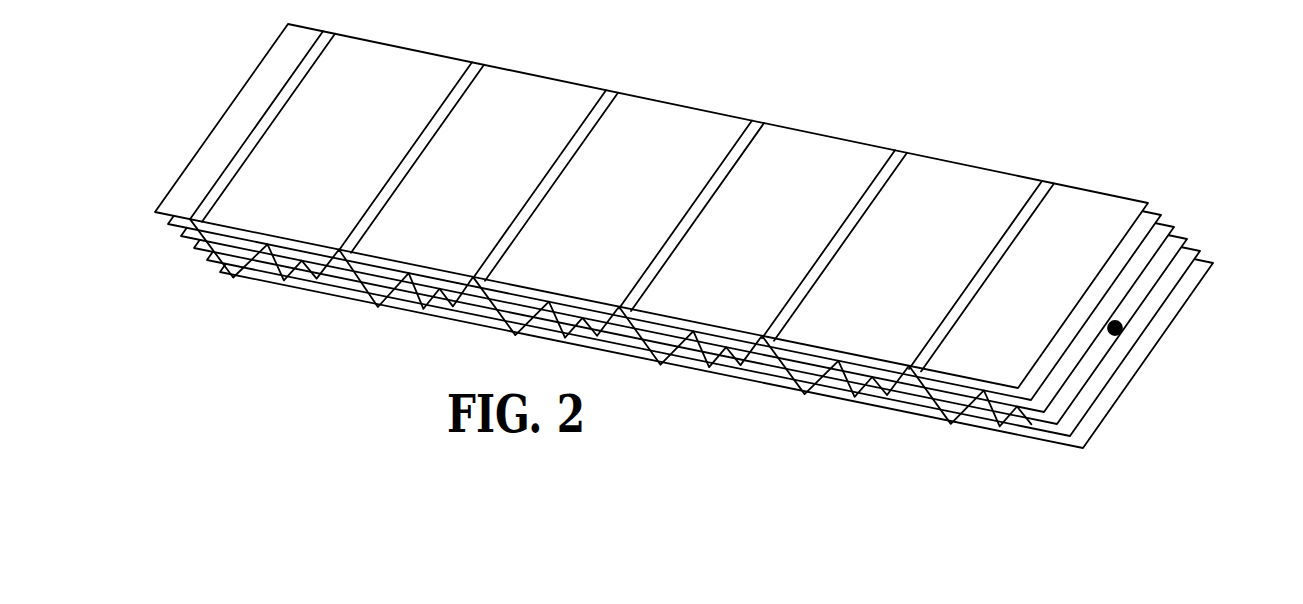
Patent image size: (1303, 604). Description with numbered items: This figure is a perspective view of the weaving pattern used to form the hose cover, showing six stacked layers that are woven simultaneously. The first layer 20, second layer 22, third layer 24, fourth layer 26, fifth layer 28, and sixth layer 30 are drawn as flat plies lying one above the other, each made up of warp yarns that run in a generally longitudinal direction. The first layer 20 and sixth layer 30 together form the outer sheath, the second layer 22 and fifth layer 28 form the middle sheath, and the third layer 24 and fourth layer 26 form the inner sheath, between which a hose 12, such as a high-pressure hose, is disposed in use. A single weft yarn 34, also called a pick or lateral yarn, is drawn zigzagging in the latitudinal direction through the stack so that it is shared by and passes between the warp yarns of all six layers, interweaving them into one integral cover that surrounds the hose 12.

The hose 12 is at (1118, 328).
The first layer 20 is at (183, 196).
The second layer 22 is at (168, 223).
The third layer 24 is at (194, 234).
The fourth layer 26 is at (202, 246).
The fifth layer 28 is at (210, 260).
The sixth layer 30 is at (222, 273).
The weft yarn 34 is at (238, 266).